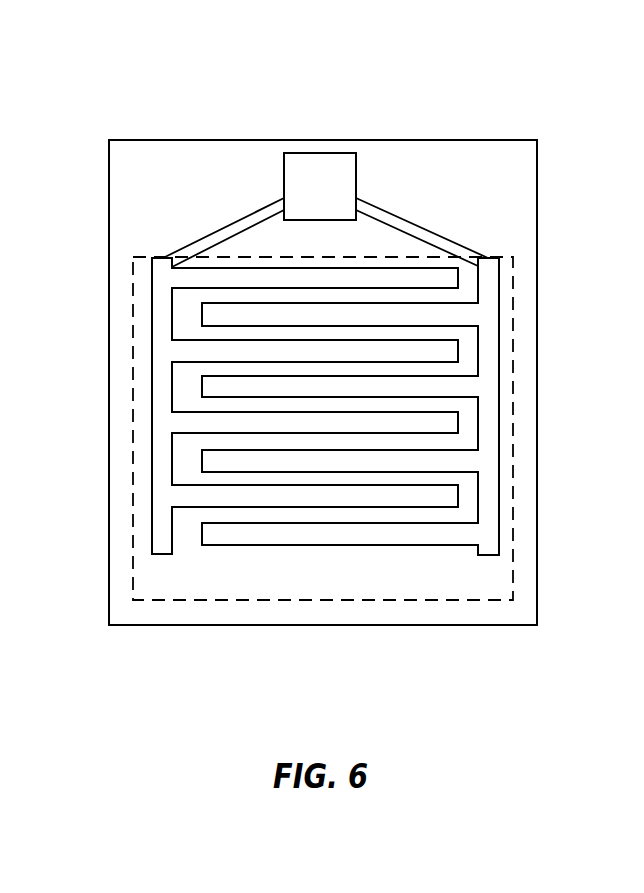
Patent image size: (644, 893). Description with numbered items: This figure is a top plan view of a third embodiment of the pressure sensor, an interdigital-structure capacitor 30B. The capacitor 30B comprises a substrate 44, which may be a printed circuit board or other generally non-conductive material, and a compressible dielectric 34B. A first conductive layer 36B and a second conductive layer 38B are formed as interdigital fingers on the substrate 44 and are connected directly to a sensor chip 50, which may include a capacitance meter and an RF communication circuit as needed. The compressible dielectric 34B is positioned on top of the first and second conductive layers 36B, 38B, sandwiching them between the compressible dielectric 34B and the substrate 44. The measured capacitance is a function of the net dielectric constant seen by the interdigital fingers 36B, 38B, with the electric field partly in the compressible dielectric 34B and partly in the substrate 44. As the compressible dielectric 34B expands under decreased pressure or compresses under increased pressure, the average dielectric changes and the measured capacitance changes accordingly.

The capacitor 30B is at (533, 98).
The compressible dielectric 34B is at (513, 330).
The first conductive layer 36B is at (162, 258).
The second conductive layer 38B is at (487, 258).
The substrate 44 is at (467, 612).
The sensor chip 50 is at (306, 198).